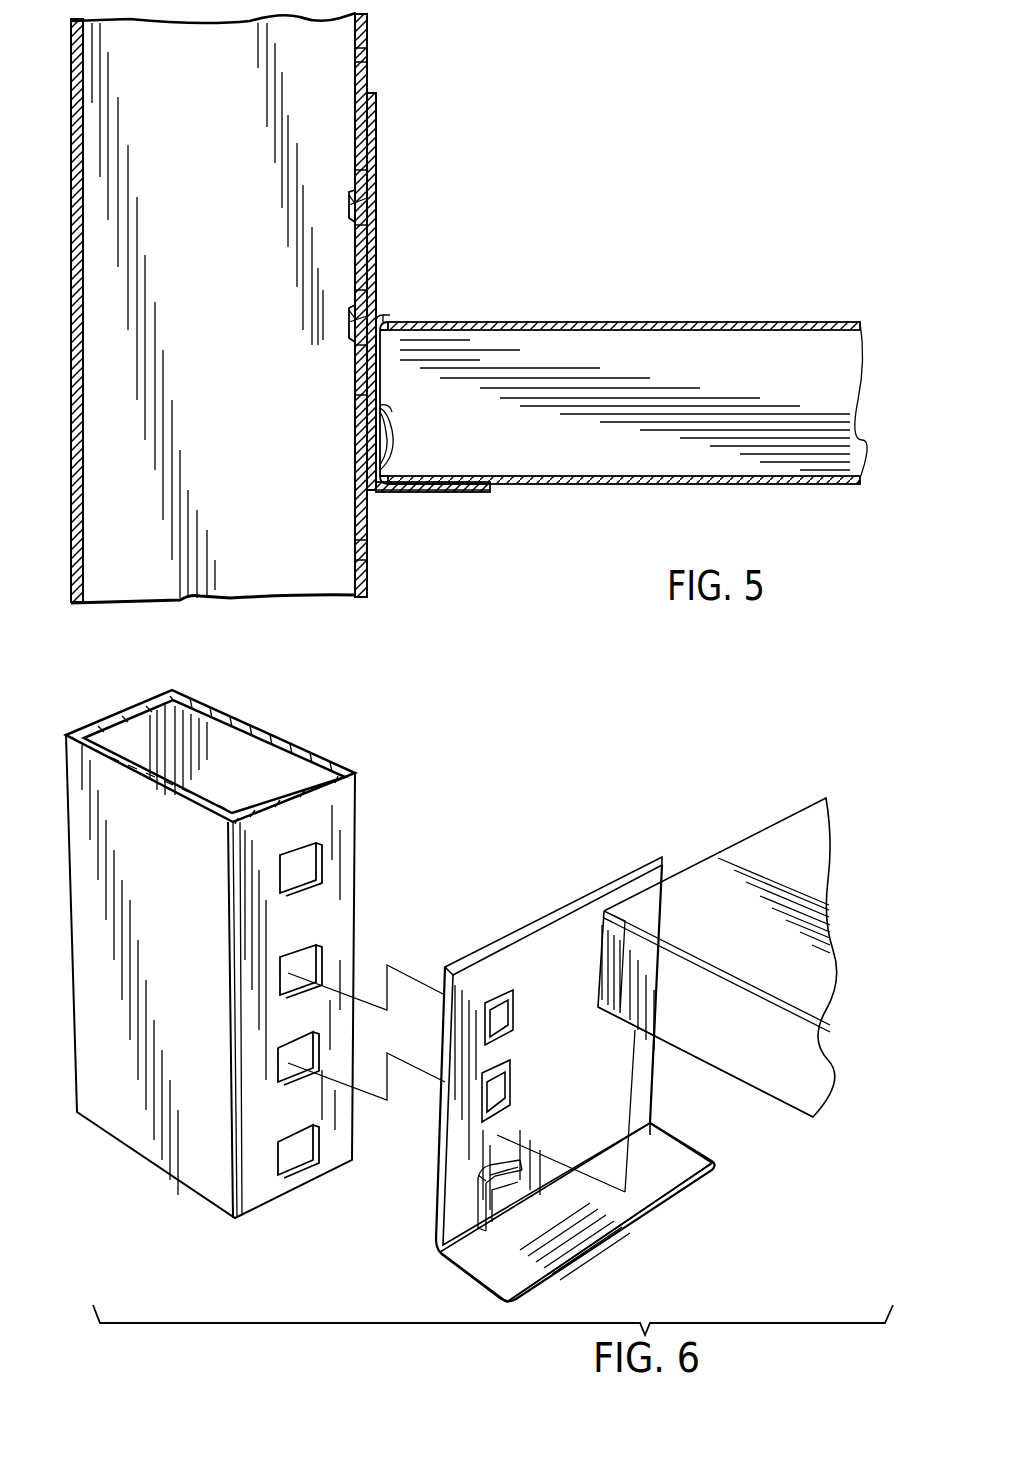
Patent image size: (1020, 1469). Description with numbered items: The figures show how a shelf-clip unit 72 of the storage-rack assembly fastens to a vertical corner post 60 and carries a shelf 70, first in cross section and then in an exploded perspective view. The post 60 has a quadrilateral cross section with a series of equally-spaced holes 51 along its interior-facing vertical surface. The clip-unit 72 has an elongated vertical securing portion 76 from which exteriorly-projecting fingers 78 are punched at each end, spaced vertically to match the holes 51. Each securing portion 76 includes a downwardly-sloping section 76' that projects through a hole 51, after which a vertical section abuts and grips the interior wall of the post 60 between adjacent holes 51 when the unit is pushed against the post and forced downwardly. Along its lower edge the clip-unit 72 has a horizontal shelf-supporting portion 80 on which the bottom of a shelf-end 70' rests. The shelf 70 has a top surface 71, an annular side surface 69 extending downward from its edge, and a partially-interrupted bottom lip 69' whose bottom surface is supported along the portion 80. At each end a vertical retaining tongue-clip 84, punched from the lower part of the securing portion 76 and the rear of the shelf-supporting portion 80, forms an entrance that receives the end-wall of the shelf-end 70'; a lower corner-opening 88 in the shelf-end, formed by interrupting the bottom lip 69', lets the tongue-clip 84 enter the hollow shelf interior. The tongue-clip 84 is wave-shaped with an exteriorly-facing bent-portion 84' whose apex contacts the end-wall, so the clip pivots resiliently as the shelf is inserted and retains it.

In FIG. 5, the holes 51 is at (368, 48).
In FIG. 6, the holes 51 is at (330, 860).
In FIG. 5, the vertical post 60 is at (75, 80).
In FIG. 6, the vertical post 60 is at (184, 854).
In FIG. 5, the side surface 69 is at (627, 403).
In FIG. 6, the side surface 69 is at (705, 1062).
In FIG. 5, the bottom lip 69' is at (597, 516).
In FIG. 6, the shelf 70 is at (750, 957).
In FIG. 6, the shelf-end 70' is at (605, 881).
In FIG. 5, the top surface 71 is at (527, 320).
In FIG. 6, the shelf clip-unit 72 is at (555, 900).
In FIG. 5, the securing portion 76 is at (426, 291).
In FIG. 6, the securing portion 76 is at (575, 1079).
In FIG. 5, the downwardly-sloping section 76' is at (305, 231).
In FIG. 5, the fingers 78 is at (350, 193).
In FIG. 6, the fingers 78 is at (513, 1003).
In FIG. 5, the shelf-supporting portion 80 is at (458, 494).
In FIG. 6, the shelf-supporting portion 80 is at (637, 1198).
In FIG. 5, the tongue-clip 84 is at (435, 439).
In FIG. 6, the tongue-clip 84 is at (567, 1163).
In FIG. 5, the bent-portion 84' is at (433, 407).
In FIG. 6, the bent-portion 84' is at (428, 1198).
In FIG. 5, the corner-opening 88 is at (420, 492).